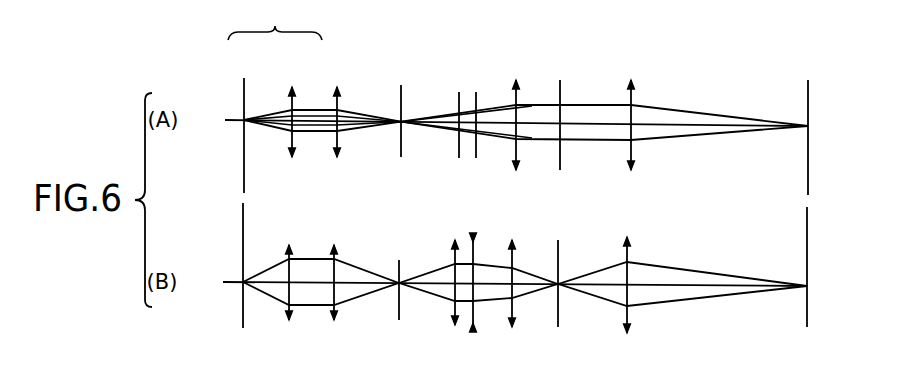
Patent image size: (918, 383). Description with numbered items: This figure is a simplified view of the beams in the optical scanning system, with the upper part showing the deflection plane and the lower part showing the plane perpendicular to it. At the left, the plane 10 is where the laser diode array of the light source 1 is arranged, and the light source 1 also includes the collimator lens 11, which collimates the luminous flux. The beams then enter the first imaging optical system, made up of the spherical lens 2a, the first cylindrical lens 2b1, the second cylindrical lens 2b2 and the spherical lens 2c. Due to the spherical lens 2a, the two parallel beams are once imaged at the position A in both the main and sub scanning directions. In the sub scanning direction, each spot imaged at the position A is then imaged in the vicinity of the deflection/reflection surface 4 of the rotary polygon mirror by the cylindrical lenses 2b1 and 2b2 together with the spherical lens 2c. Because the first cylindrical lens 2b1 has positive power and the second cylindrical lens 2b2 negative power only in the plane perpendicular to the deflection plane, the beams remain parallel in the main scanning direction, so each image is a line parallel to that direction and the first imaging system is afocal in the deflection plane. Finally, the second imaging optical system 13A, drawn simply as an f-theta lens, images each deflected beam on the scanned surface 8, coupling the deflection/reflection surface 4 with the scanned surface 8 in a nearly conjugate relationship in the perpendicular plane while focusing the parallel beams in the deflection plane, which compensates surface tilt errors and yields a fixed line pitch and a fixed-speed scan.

The light source 1 is at (275, 21).
The plane on which the laser diode array is arranged 10 is at (247, 81).
The collimator lens 11 is at (294, 84).
The spherical lens 2a is at (343, 84).
The imaging position A is at (404, 84).
The first cylindrical lens 2b1 is at (460, 88).
The second cylindrical lens 2b2 is at (480, 88).
The spherical lens 2c is at (521, 79).
The deflection/reflection surface 4 is at (563, 80).
The second imaging optical system 13A is at (634, 80).
The scanned surface 8 is at (806, 92).